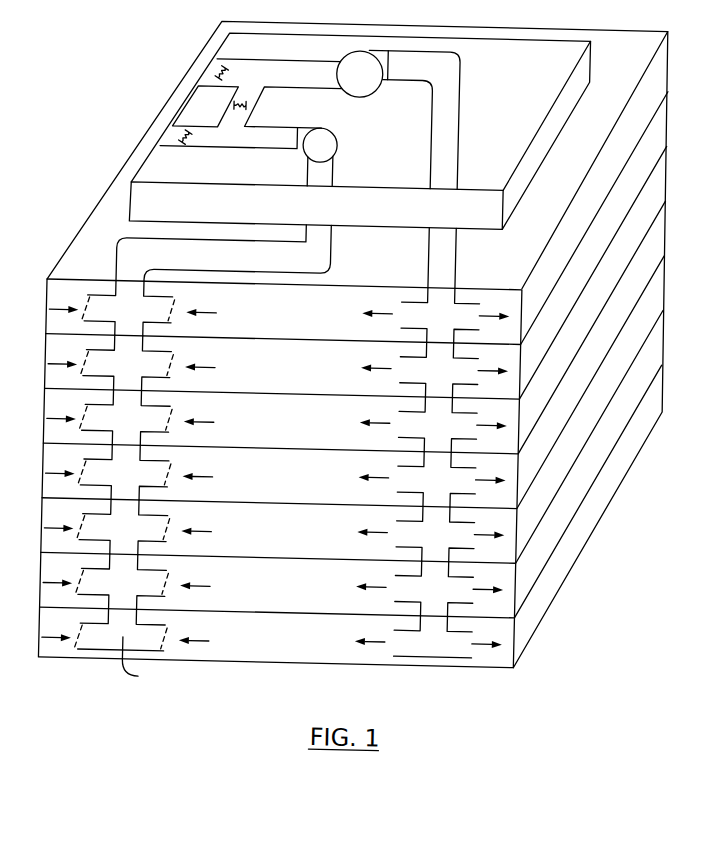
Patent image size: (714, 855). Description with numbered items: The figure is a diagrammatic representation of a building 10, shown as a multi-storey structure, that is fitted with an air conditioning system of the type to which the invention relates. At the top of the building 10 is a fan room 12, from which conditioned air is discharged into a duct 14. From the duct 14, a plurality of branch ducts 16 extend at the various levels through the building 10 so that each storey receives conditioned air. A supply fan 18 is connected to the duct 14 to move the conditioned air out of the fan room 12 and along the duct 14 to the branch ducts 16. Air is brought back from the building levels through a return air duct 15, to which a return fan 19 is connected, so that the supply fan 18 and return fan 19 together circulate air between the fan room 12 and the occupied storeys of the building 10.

The building 10 is at (125, 155).
The fan room 12 is at (564, 91).
The duct 14 is at (453, 137).
The return air duct 15 is at (331, 166).
The branch ducts 16 is at (354, 349).
The supply fan 18 is at (338, 50).
The return fan 19 is at (332, 128).